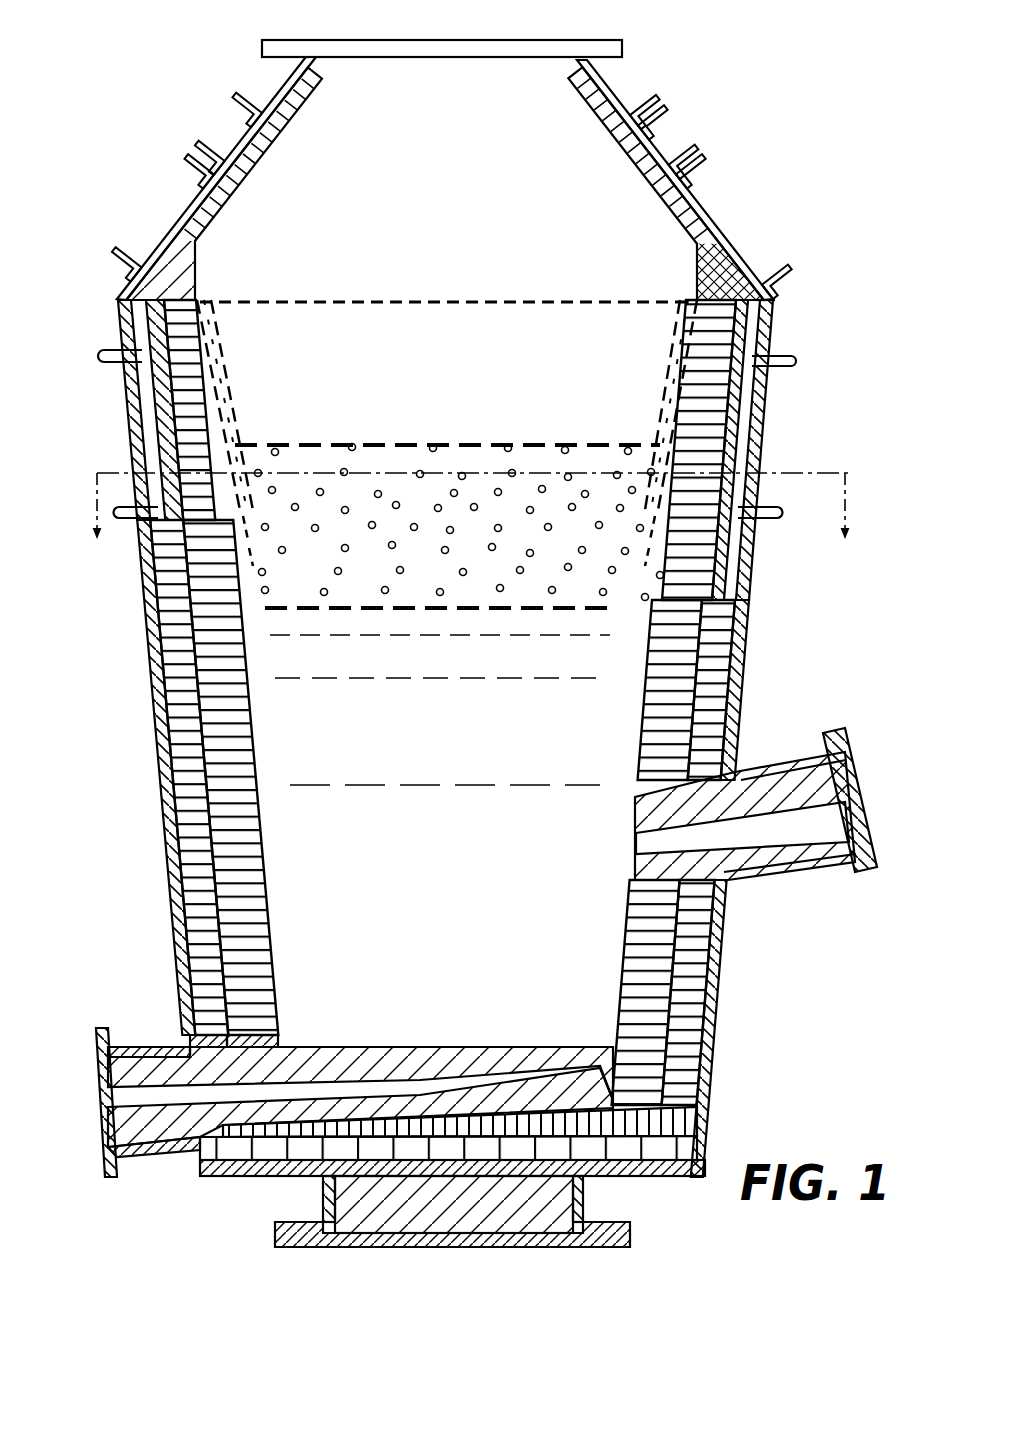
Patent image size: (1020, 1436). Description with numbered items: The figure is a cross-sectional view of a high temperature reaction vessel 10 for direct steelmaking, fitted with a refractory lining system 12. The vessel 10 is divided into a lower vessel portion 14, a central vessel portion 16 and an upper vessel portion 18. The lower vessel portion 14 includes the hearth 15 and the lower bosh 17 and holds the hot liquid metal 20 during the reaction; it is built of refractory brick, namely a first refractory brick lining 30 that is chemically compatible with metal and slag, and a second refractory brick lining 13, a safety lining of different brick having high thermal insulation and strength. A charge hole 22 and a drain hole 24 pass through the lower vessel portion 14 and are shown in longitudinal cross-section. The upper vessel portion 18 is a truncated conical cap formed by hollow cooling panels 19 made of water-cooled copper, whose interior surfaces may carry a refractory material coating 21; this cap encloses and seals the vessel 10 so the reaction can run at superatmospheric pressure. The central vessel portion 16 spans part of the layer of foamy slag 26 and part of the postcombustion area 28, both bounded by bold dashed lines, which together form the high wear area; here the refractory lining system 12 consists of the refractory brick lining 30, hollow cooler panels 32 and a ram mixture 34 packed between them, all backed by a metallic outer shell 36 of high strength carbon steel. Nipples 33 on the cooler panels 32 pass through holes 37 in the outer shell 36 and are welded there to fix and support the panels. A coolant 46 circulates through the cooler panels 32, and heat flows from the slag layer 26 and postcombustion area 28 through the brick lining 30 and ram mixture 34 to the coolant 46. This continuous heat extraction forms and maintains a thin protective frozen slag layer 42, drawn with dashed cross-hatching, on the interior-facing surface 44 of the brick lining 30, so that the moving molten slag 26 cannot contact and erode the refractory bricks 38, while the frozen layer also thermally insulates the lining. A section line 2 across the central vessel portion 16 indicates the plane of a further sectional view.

The section line 2- 2 is at (473, 527).
The high temperature reaction vessel 10 is at (794, 197).
The refractory lining system 12 is at (262, 395).
The second refractory brick lining 13 is at (696, 916).
The lower vessel portion 14 is at (80, 540).
The hearth 15 is at (636, 1192).
The central vessel portion 16 is at (70, 305).
The lower bosh 17 is at (748, 1000).
The upper vessel portion 18 is at (100, 302).
The hollow cooling panels 19 is at (698, 192).
The hot liquid metal 20 is at (598, 722).
The refractory material coating 21 is at (643, 118).
The charge hole 22 is at (864, 773).
The drain hole 24 is at (93, 1112).
The slag layer 26 is at (430, 484).
The postcombustion area 28 is at (518, 332).
The refractory brick lining 30 is at (676, 398).
The hollow cooler panels 32 is at (760, 438).
The nipples 33 is at (788, 372).
The ram mixture 34 is at (776, 316).
The metallic outer shell 36 is at (752, 600).
The holes 37 is at (784, 352).
The refractory bricks 38 is at (684, 380).
The frozen slag layer 42 is at (246, 493).
The interior-facing surface 44 is at (676, 345).
The coolant 46 is at (800, 360).